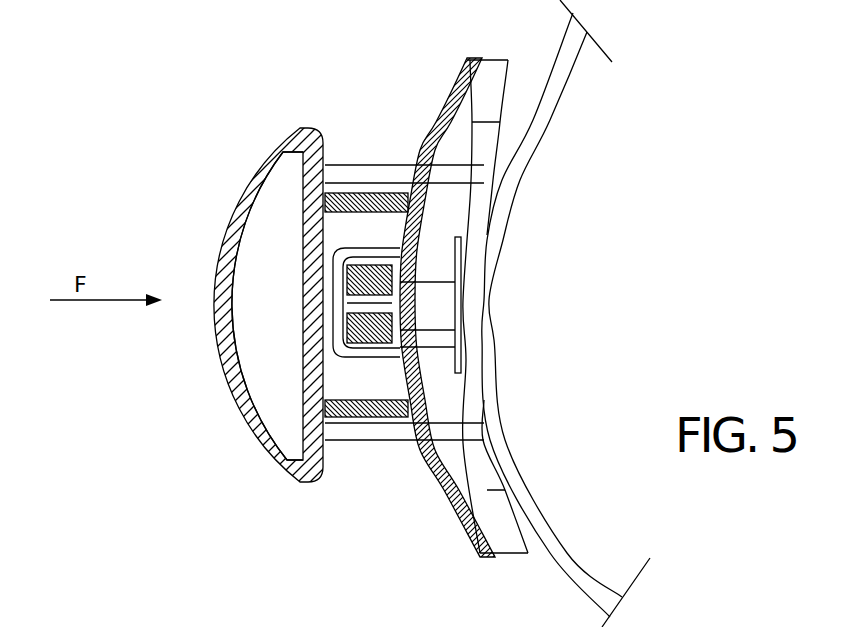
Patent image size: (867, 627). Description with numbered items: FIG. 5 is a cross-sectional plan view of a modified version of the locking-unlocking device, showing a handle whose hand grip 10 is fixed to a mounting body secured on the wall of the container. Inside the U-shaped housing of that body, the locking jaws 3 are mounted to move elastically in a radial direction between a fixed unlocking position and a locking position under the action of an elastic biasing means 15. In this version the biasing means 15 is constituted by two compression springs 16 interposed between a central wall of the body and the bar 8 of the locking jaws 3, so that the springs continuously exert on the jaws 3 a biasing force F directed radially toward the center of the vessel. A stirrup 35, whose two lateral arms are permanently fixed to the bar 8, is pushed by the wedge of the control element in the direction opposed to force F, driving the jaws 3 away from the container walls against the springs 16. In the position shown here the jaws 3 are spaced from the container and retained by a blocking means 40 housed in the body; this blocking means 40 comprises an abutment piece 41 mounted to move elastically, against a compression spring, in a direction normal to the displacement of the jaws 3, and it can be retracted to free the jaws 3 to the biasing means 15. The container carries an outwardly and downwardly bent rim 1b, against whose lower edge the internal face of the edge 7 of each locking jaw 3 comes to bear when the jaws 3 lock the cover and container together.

The rim 1b is at (532, 90).
The locking jaws 3 is at (438, 510).
The edge 7 is at (502, 540).
The bar 8 is at (402, 281).
The hand grip 10 is at (233, 378).
The elastic biasing means 15 is at (384, 183).
The compression springs 16 is at (350, 176).
The stirrup 35 is at (260, 268).
The blocking means 40 is at (446, 340).
The abutment piece 41 is at (437, 302).